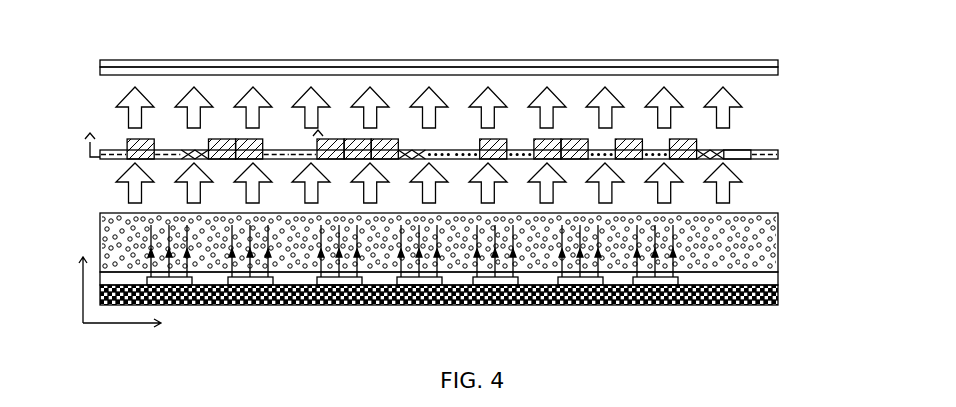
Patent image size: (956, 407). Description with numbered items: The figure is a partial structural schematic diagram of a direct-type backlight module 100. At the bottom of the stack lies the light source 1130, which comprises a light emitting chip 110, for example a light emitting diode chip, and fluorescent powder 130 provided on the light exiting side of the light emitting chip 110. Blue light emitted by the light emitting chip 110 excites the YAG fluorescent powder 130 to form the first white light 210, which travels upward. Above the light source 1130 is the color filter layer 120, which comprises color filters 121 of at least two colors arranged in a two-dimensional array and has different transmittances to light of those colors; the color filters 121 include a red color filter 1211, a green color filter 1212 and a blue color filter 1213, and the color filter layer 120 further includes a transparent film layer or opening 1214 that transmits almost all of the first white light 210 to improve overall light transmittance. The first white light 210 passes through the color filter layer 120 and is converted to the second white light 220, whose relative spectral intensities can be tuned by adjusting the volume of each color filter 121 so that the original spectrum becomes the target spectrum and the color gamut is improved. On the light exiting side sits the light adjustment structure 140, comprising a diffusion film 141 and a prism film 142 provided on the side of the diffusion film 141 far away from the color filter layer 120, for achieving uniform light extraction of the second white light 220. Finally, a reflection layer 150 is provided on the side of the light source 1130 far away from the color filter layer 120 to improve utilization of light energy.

The backlight module 100 is at (481, 191).
The light adjustment structure 140 is at (494, 55).
The diffusion film 141 is at (757, 72).
The prism film 142 is at (757, 63).
The second white light 220 is at (135, 105).
The first white light 210 is at (135, 182).
The color filter layer 120 is at (514, 147).
The color filters 121 is at (478, 147).
The red color filter 1211 is at (680, 143).
The green color filter 1212 is at (778, 157).
The blue color filter 1213 is at (712, 150).
The transparent film layer or opening 1214 is at (732, 154).
The light source 1130 is at (500, 252).
The fluorescent powder 130 is at (760, 243).
The light emitting chip 110 is at (678, 282).
The reflection layer 150 is at (590, 296).